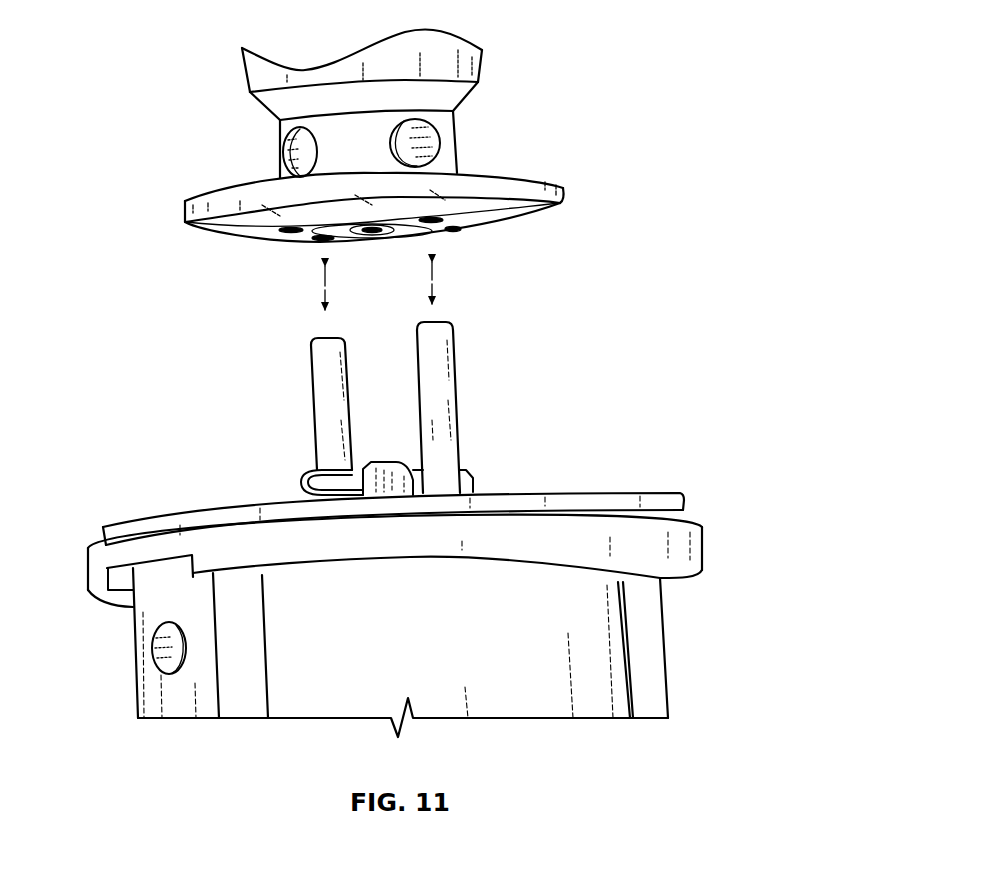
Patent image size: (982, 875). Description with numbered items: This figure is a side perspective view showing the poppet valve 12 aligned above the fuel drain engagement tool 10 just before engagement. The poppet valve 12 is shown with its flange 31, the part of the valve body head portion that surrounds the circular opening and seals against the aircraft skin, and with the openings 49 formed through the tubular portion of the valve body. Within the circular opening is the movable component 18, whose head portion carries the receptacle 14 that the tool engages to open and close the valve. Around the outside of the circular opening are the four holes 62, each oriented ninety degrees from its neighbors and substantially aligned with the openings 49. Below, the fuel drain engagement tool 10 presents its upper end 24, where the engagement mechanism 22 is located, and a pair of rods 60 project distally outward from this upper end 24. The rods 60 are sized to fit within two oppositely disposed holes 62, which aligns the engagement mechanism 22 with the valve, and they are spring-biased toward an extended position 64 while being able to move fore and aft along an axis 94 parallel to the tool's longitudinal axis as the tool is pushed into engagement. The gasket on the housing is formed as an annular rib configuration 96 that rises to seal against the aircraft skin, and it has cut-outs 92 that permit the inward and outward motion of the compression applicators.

The fuel drain engagement tool 10 is at (728, 555).
The poppet valve 12 is at (519, 102).
The receptacle 14 is at (374, 234).
The movable component 18 is at (420, 228).
The engagement mechanism 22 is at (308, 457).
The upper end 24 is at (492, 487).
The flange 31 is at (523, 216).
The openings 49 is at (283, 152).
The rods 60 is at (320, 395).
The holes 62 is at (433, 218).
The extended position 64 is at (505, 349).
The cut-outs 92 is at (112, 577).
The axis 94 is at (326, 288).
The annular rib configuration 96 is at (623, 497).